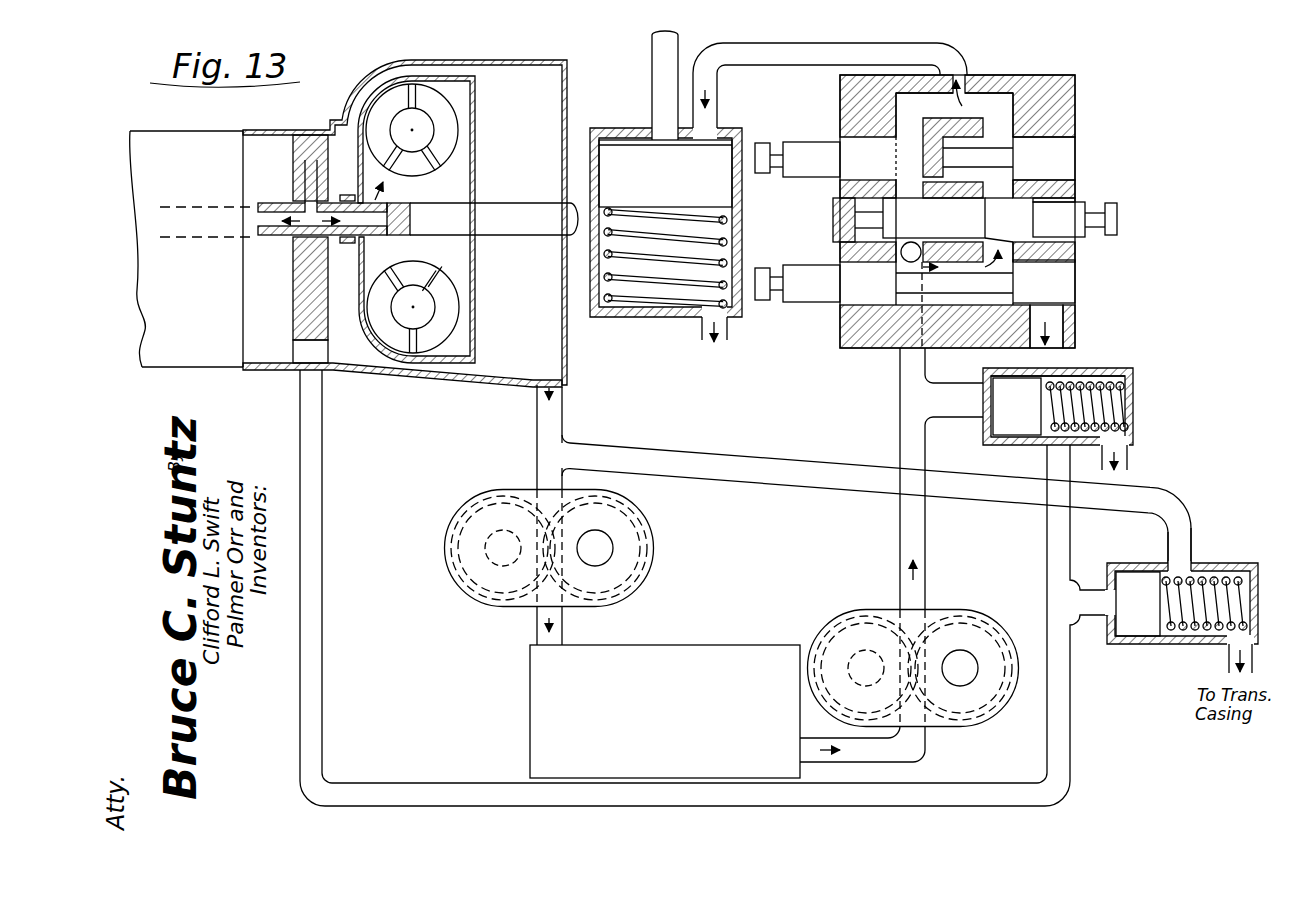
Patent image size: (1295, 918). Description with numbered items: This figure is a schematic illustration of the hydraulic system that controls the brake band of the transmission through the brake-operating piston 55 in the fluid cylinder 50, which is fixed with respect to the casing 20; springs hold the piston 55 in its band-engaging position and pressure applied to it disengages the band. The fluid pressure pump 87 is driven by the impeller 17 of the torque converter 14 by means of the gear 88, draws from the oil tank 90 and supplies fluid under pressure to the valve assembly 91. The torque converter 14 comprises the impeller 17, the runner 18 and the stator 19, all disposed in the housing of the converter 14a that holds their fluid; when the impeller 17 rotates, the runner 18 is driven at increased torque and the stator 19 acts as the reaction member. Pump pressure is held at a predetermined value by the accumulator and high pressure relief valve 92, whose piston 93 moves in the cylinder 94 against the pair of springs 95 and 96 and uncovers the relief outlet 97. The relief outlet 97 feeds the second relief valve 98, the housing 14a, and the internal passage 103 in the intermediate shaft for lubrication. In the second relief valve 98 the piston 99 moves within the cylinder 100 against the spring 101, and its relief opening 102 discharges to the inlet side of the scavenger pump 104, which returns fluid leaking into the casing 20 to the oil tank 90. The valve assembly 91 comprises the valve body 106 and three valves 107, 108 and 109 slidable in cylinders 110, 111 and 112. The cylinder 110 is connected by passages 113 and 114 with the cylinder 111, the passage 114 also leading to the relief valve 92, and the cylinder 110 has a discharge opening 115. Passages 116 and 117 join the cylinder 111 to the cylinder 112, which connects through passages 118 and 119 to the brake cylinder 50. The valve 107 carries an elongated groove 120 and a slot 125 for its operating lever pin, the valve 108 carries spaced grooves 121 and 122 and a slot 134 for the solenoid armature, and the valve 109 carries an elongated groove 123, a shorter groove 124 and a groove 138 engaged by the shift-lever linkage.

The torque converter 14 is at (388, 80).
The impeller 17 is at (412, 218).
The runner 18 is at (424, 218).
The stator 19 is at (412, 218).
The housing of the converter 14a is at (473, 178).
The gear 88 is at (348, 195).
The internal passage 103 is at (272, 238).
The casing 20 is at (283, 370).
The fluid cylinder 50 is at (632, 128).
The piston 55 is at (612, 155).
The groove 138 is at (762, 143).
The valve 109 is at (803, 142).
The passage 119 is at (890, 115).
The groove 124 is at (886, 157).
The elongated groove 123 is at (990, 155).
The passage 118 is at (1022, 120).
The valve body 106 is at (1037, 75).
The valve assembly 91 is at (1080, 103).
The cylinder 112 is at (1068, 145).
The cylinder 111 is at (1064, 200).
The slot 134 is at (1110, 205).
The passage 117 is at (934, 218).
The passage 116 is at (982, 205).
The passage 113 is at (990, 240).
The groove 122 is at (1016, 232).
The valve 108 is at (1087, 235).
The groove 121 is at (870, 250).
The passage 114 is at (905, 263).
The cylinder 110 is at (1068, 268).
The elongated groove 120 is at (960, 293).
The discharge opening 115 is at (1062, 321).
The slot 125 is at (766, 300).
The valve 107 is at (820, 302).
The accumulator and high pressure relief valve 92 is at (1128, 364).
The spring 95 is at (1088, 370).
The piston 93 is at (997, 387).
The cylinder 94 is at (1133, 392).
The spring 96 is at (1046, 400).
The relief outlet 97 is at (1047, 470).
The scavenger pump 104 is at (653, 540).
The fluid pressure pump 87 is at (962, 610).
The oil tank 90 is at (530, 740).
The piston 99 is at (1140, 580).
The relief opening 102 is at (1180, 568).
The cylinder 100 is at (1236, 568).
The second relief valve 98 is at (1254, 562).
The spring 101 is at (1197, 644).